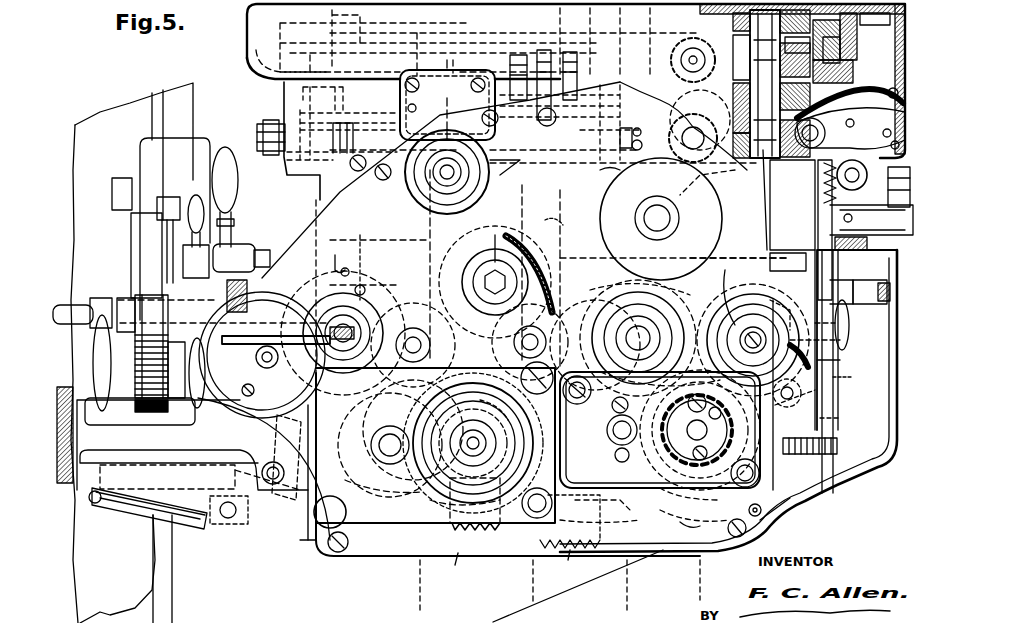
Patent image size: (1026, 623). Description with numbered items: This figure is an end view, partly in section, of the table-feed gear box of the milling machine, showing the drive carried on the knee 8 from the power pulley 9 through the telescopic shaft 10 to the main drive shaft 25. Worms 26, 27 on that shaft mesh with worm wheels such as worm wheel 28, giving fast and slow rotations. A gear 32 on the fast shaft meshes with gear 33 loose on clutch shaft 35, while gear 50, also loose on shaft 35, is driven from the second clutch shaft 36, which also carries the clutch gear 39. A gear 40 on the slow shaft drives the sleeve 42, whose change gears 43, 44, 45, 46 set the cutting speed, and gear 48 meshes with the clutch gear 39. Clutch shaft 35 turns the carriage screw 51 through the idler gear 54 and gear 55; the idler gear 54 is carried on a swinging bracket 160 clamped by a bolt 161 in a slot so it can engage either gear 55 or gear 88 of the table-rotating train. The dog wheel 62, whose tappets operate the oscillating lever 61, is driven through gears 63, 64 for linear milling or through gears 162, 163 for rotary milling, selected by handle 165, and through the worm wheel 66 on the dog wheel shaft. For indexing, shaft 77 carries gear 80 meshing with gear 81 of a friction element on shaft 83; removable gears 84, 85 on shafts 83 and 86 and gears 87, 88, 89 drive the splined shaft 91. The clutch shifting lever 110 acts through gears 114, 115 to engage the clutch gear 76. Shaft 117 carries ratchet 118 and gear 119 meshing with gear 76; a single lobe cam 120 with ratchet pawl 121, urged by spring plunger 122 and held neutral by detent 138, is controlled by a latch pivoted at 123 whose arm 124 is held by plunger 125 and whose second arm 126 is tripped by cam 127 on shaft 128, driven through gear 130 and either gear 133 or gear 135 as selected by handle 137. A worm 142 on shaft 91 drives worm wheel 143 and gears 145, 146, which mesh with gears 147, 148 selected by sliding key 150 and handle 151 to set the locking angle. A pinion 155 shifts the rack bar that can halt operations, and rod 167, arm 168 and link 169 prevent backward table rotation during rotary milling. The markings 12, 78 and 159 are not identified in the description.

The knee 8 is at (441, 99).
The power pulley 9 is at (519, 196).
The telescopic shaft 10 is at (128, 512).
The section line 12- 12 is at (692, 594).
The main drive shaft 25 is at (246, 530).
The worm 26 is at (450, 569).
The worm 27 is at (568, 563).
The worm wheel 28 is at (518, 523).
The gear 32 is at (416, 480).
The gear 33 is at (390, 445).
The clutch shaft 35 is at (410, 362).
The clutch shaft 36 is at (530, 342).
The clutch gear 39 is at (539, 274).
The gear 40 is at (663, 432).
The sleeve 42 is at (460, 444).
The change gear 43 is at (478, 420).
The change gear 44 is at (344, 512).
The change gear 45 is at (372, 450).
The change gear 46 is at (445, 505).
The gear 48 is at (462, 418).
The gear 50 is at (418, 402).
The carriage screw 51 is at (440, 178).
The idler gear 54 is at (535, 235).
The gear 55 is at (495, 165).
The oscillating lever 61 is at (105, 345).
The dog wheel 62 is at (142, 258).
The gear 63 is at (338, 270).
The gear 64 is at (286, 457).
The worm wheel 66 is at (240, 248).
The clutch gear 76 is at (645, 282).
The shaft 77 is at (648, 333).
The rack 78 is at (620, 522).
The gear 80 is at (638, 338).
The gear 81 is at (595, 344).
The shaft 83 is at (372, 300).
The removable gear 84 is at (602, 509).
The removable gear 85 is at (629, 407).
The shaft 86 is at (668, 495).
The gear 87 is at (655, 468).
The gear 88 is at (753, 333).
The gear 89 is at (605, 172).
The splined shaft 91 is at (622, 139).
The clutch shifting lever 110 is at (238, 190).
The gear 114 is at (61, 423).
The gear 115 is at (87, 506).
The shaft 117 is at (728, 522).
The ratchet 118 is at (680, 533).
The gear 119 is at (778, 524).
The single lobe cam 120 is at (668, 517).
The ratchet pawl 121 is at (772, 412).
The spring plunger 122 is at (662, 378).
The latch pivot 123 is at (843, 421).
The latch arm 124 is at (790, 375).
The spring pressed plunger 125 is at (838, 400).
The latch arm 126 is at (850, 322).
The cam 127 is at (778, 312).
The shaft 128 is at (788, 262).
The gear 130 is at (747, 338).
The gear 133 is at (735, 290).
The gear 135 is at (740, 262).
The handle 137 is at (848, 290).
The spring pressed detent 138 is at (778, 472).
The worm 142 is at (661, 219).
The worm wheel 143 is at (714, 182).
The gear 145 is at (670, 60).
The gear 146 is at (677, 120).
The gear 147 is at (850, 45).
The gear 148 is at (865, 85).
The sliding key 150 is at (850, 149).
The handle 151 is at (815, 165).
The pinion 155 is at (830, 240).
The nut 159 is at (257, 136).
The swinging bracket 160 is at (495, 282).
The bolt 161 is at (499, 241).
The gear 162 is at (357, 258).
The gear 163 is at (264, 360).
The handle 165 is at (227, 292).
The rod 167 is at (262, 473).
The arm 168 is at (303, 494).
The link 169 is at (380, 272).